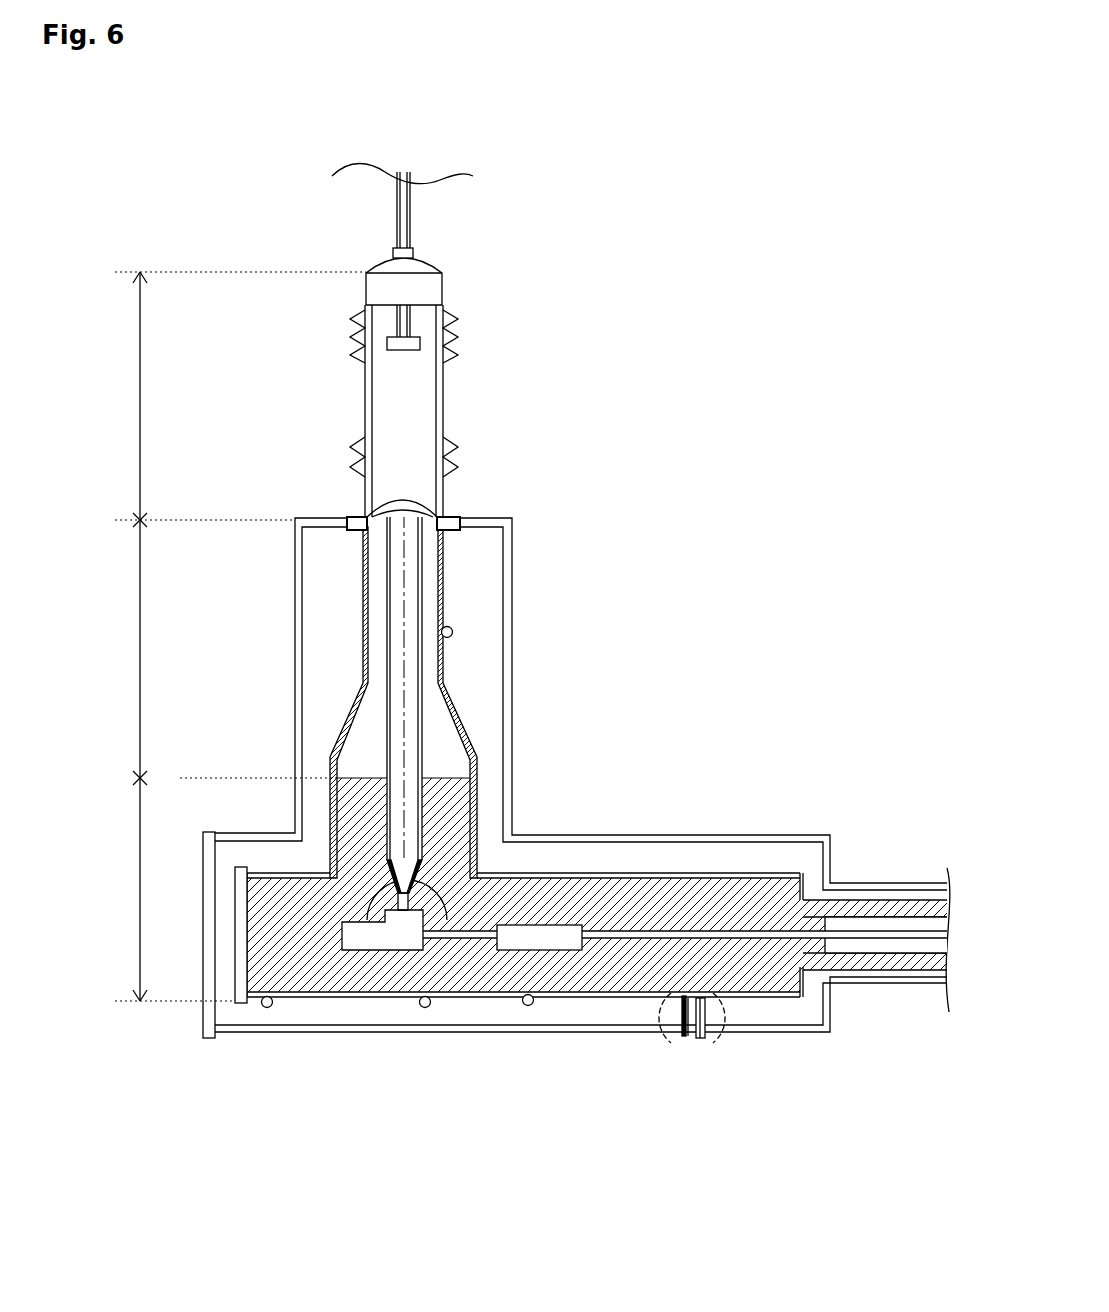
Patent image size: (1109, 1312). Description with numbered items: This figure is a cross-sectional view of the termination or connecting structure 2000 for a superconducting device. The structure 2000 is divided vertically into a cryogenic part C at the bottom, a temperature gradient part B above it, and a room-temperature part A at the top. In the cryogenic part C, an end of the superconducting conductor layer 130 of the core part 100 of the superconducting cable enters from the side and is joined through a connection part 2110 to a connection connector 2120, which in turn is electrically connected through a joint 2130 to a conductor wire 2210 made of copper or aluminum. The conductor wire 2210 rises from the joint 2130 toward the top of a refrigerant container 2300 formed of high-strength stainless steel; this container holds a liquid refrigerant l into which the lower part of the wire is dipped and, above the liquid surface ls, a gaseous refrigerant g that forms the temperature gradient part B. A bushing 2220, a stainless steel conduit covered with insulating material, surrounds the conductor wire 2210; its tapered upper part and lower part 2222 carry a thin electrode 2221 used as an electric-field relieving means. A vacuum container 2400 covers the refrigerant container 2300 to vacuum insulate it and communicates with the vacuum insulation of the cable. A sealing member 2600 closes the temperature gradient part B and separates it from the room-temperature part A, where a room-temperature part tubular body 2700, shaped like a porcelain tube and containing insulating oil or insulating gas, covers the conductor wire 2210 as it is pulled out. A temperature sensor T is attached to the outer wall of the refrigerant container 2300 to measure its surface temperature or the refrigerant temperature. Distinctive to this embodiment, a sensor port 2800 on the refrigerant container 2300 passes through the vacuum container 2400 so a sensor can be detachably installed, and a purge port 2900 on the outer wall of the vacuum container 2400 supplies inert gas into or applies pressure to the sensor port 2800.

The connecting structure 2000 is at (662, 149).
The conductor wire 2210 is at (410, 210).
The bushing 2220 is at (385, 706).
The thin electrode 2221 is at (408, 950).
The lower part 2222 is at (373, 925).
The joint 2130 is at (383, 930).
The connection connector 2120 is at (447, 920).
The connection part 2110 is at (563, 950).
The refrigerant container 2300 is at (465, 733).
The vacuum container 2400 is at (512, 687).
The sealing member 2600 is at (460, 527).
The room-temperature part tubular body 2700 is at (443, 388).
The sensor port 2800 is at (673, 1050).
The purge port 2900 is at (712, 1038).
The core part 100 is at (857, 927).
The superconducting conductor layer 130 is at (902, 940).
The temperature sensor T is at (453, 631).
The gaseous refrigerant g is at (463, 767).
The liquid refrigerant l is at (477, 807).
The liquid surface ls is at (362, 778).
The room-temperature part A is at (693, 1197).
The temperature gradient part B is at (205, 652).
The cryogenic part C is at (175, 889).